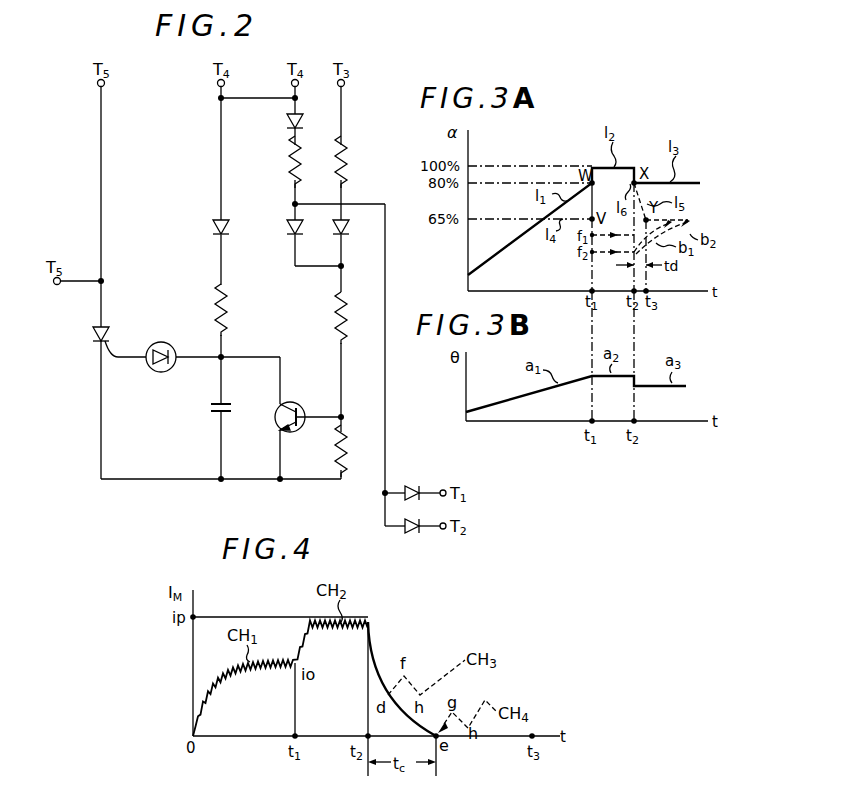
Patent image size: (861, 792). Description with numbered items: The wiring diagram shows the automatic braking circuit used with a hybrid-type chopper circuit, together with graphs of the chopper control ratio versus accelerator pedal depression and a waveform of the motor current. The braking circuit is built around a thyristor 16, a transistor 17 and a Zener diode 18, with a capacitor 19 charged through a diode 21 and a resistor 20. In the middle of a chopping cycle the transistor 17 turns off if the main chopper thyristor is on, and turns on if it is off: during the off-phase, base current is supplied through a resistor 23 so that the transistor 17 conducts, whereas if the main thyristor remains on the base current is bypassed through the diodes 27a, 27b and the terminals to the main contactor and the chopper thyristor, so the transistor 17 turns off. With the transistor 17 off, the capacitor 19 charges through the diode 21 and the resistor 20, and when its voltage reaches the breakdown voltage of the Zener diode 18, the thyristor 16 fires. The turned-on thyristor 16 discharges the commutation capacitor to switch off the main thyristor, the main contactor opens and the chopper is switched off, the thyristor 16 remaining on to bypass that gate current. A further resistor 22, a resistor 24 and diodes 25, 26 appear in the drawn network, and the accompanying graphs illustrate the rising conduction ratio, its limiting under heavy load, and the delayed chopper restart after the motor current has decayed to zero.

The thyristor 16 is at (95, 344).
The transistor 17 is at (278, 416).
The Zener diode 18 is at (161, 372).
The capacitor 19 is at (211, 410).
The resistor 20 is at (213, 305).
The diode 21 is at (213, 222).
The resistor 22 is at (348, 160).
The resistor 23 is at (337, 308).
The resistor 24 is at (348, 446).
The diode 25 is at (349, 233).
The diode 26 is at (288, 230).
The diode 27a is at (418, 486).
The diode 27b is at (412, 533).